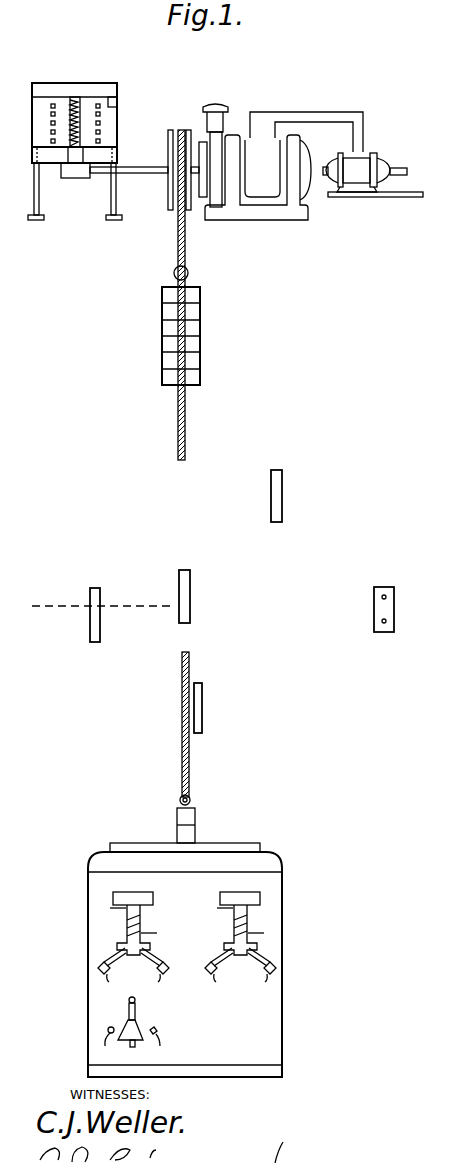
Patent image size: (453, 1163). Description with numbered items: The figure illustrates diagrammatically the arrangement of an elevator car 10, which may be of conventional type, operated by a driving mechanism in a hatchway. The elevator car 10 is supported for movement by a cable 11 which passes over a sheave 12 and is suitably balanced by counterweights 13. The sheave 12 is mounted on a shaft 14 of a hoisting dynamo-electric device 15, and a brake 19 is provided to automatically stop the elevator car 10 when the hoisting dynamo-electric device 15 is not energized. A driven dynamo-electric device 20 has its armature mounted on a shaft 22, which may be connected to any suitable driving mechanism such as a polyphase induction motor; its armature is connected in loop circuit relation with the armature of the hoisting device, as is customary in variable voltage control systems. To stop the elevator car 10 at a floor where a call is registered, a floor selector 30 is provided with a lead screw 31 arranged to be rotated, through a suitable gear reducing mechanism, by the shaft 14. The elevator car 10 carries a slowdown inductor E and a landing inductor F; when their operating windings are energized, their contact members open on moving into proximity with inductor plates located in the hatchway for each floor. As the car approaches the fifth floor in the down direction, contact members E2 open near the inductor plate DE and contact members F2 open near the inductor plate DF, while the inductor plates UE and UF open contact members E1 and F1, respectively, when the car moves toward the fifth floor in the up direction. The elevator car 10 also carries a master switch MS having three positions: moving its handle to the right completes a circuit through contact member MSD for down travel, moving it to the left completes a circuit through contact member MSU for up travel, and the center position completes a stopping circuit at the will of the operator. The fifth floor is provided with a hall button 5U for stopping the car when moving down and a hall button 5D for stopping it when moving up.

The floor selector 30 is at (83, 67).
The lead screw 31 is at (82, 107).
The shaft 14 is at (133, 168).
The sheave 12 is at (168, 140).
The cable 11 is at (186, 433).
The brake 19 is at (215, 118).
The hoisting dynamo-electric device 15 is at (297, 92).
The driven dynamo-electric device 20 is at (403, 134).
The shaft 22 is at (402, 170).
The counterweights 13 is at (205, 330).
The inductor plate DE is at (283, 490).
The inductor plate UF is at (100, 625).
The inductor plate DF is at (190, 600).
The hall button 5U is at (390, 597).
The hall button 5D is at (390, 621).
The inductor plate UE is at (205, 700).
The elevator car 10 is at (253, 832).
The landing inductor F is at (132, 892).
The contact members F1 is at (111, 972).
The contact members F2 is at (155, 972).
The slowdown inductor E is at (243, 892).
The contact members E1 is at (217, 972).
The contact members E2 is at (262, 972).
The master switch MS is at (170, 1018).
The contact member MSD is at (106, 1045).
The contact member MSU is at (165, 1045).